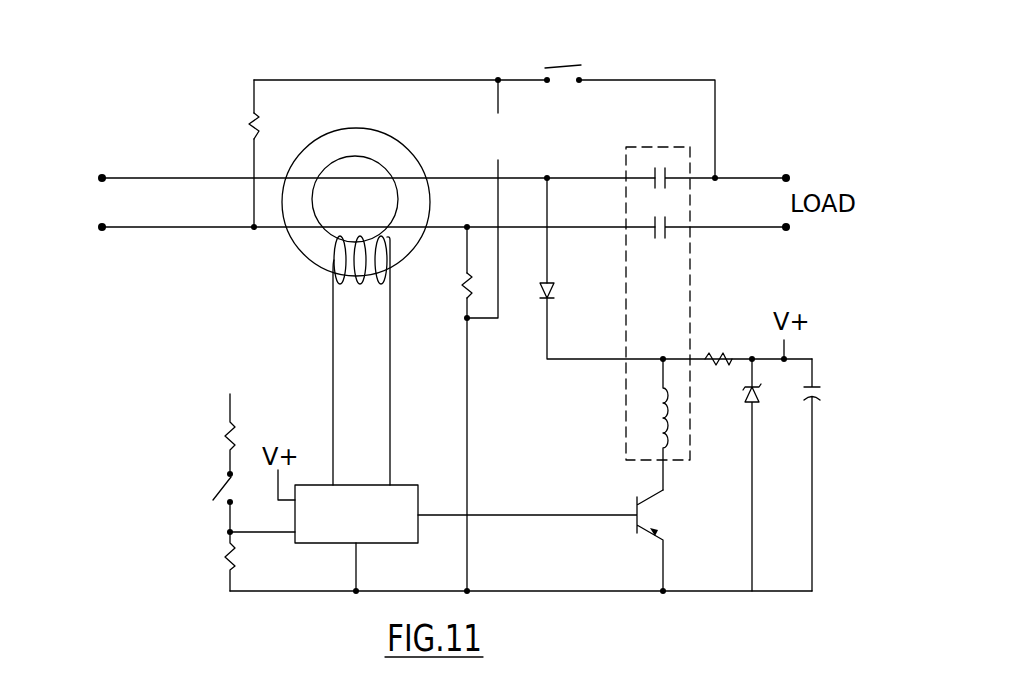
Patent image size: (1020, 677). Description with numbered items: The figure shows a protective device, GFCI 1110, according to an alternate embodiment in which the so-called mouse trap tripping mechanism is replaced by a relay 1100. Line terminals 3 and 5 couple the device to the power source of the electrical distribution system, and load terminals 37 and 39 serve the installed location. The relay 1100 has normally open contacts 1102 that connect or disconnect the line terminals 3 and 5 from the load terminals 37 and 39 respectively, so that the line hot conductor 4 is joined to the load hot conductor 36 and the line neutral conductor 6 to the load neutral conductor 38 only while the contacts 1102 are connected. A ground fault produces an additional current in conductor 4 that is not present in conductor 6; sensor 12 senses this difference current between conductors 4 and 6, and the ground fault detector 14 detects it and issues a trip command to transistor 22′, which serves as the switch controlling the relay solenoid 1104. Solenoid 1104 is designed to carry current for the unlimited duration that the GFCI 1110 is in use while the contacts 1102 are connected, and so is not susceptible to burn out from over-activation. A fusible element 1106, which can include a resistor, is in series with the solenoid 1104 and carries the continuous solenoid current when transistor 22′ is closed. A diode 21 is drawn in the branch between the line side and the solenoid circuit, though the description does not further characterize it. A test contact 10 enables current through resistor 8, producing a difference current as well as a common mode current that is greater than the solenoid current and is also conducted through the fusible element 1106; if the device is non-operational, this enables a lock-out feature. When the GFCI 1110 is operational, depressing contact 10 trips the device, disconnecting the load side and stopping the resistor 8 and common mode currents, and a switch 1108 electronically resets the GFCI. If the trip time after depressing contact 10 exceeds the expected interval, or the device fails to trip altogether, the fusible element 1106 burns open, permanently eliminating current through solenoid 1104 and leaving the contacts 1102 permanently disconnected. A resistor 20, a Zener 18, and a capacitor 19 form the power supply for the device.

The line terminal 3 is at (102, 172).
The line hot conductor 4 is at (167, 178).
The line terminal 5 is at (102, 232).
The line neutral conductor 6 is at (168, 232).
The resistor 8 is at (252, 122).
The contact 10 is at (577, 66).
The sensor 12 is at (311, 272).
The ground fault detector 14 is at (333, 545).
The Zener 18 is at (758, 390).
The capacitor 19 is at (815, 384).
The resistor 20 is at (712, 352).
The diode 21 is at (553, 295).
The transistor 22′ is at (657, 513).
The load hot conductor 36 is at (741, 178).
The load terminal 37 is at (786, 178).
The load neutral conductor 38 is at (727, 227).
The load terminal 39 is at (786, 232).
The relay 1100 is at (635, 147).
The normally open contacts 1102 is at (653, 222).
The solenoid 1104 is at (656, 427).
The fusible element 1106 is at (467, 300).
The switch 1108 is at (214, 491).
The GFCI 1110 is at (638, 67).